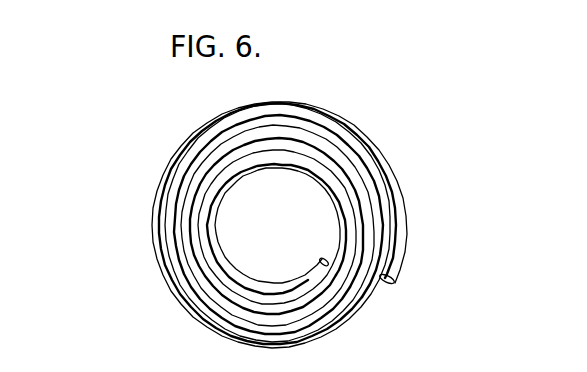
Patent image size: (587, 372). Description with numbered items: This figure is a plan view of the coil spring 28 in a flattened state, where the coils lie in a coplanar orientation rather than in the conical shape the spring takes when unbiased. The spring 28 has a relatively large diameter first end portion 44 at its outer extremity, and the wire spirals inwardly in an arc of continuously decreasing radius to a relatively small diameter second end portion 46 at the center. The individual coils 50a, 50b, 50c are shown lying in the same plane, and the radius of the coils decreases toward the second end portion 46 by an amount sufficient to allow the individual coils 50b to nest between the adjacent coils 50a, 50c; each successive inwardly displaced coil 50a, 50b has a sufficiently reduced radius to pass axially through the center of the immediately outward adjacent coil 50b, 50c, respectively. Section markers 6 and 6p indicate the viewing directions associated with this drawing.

The coil spring 28 is at (120, 237).
The first end portion 44 is at (403, 257).
The second end portion 46 is at (305, 281).
The coil 50a is at (343, 230).
The coil 50b is at (368, 198).
The coil 50c is at (333, 130).
The section view indicator 6 is at (295, 189).
The section view indicator 6 prime 6p is at (393, 103).